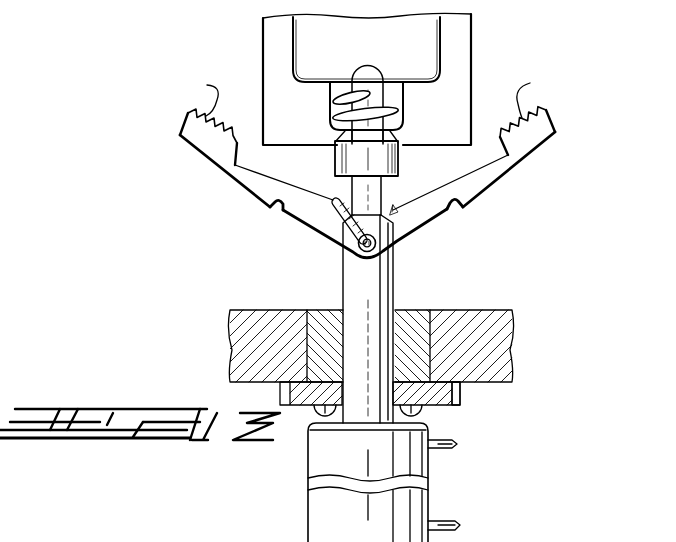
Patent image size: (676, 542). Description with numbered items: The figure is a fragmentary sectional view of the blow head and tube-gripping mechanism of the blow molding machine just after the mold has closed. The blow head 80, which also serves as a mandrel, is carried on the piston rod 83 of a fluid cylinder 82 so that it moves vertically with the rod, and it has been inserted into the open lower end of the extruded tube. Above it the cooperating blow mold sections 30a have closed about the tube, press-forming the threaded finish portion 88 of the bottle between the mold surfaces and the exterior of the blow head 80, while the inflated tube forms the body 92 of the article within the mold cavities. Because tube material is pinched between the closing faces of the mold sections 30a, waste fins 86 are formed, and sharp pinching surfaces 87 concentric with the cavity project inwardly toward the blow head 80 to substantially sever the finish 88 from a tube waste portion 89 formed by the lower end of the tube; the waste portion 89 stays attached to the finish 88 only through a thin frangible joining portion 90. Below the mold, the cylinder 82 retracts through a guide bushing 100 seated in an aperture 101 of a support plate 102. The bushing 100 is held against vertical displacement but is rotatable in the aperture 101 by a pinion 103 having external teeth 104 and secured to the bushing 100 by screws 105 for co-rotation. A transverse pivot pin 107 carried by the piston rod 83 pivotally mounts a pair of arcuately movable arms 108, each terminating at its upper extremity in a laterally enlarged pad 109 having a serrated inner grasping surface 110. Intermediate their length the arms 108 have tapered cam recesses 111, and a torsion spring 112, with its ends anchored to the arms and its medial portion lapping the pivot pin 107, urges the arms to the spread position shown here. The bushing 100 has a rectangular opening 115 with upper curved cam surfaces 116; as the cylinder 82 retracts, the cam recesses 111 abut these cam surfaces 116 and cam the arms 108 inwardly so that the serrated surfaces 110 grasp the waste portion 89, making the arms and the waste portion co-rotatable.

The blow head 80 is at (367, 65).
The body of the final article 92 is at (428, 43).
The blow mold sections 30a is at (489, 60).
The waste fins 86 is at (333, 99).
The threaded finish portion 88 is at (345, 115).
The pinching surfaces 87 is at (343, 142).
The frangible joining portion 90 is at (356, 143).
The tube waste portion 89 is at (392, 170).
The serrated inner grasping surface 110 is at (374, 109).
The laterally enlarged pad 109 is at (198, 140).
The arcuately movable arms 108 is at (255, 175).
The tapered cam recesses 111 is at (273, 212).
The torsion spring 112 is at (345, 228).
The transverse pivot pin 107 is at (360, 254).
The piston rod 83 is at (386, 263).
The guide bushing 100 is at (405, 320).
The aperture 101 is at (428, 322).
The support plate 102 is at (498, 322).
The rectangular opening 115 is at (336, 330).
The curved cam surfaces 116 is at (394, 322).
The external teeth 104 is at (462, 394).
The pinion 103 is at (435, 404).
The screws 105 is at (420, 412).
The fluid cylinder 82 is at (415, 512).